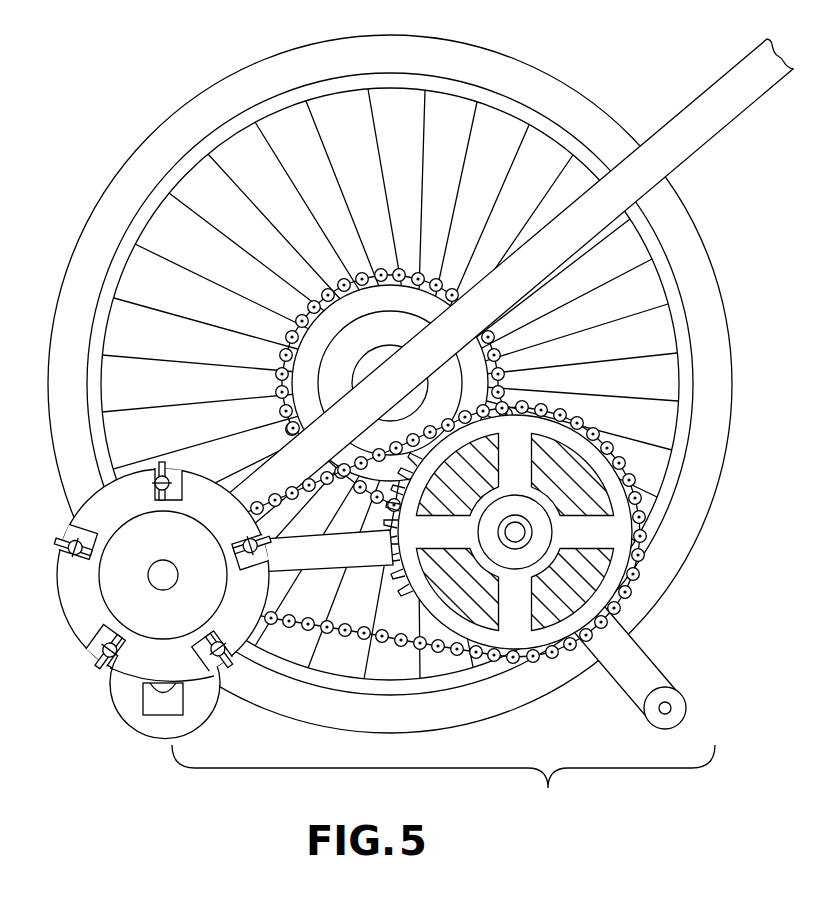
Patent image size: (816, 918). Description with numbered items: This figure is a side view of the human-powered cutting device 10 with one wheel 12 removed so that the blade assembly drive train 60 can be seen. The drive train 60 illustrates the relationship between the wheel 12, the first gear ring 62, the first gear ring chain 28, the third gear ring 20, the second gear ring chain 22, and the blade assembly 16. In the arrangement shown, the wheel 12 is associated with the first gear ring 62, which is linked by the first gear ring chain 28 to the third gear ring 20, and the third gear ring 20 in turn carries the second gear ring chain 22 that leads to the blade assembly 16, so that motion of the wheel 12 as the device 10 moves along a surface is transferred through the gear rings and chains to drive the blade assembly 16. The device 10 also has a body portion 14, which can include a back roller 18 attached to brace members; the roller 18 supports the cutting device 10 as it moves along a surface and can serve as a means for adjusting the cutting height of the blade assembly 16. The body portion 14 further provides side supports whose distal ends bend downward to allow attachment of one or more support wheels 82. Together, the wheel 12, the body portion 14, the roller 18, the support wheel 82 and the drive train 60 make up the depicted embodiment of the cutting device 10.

The cutting device 10 is at (122, 106).
The wheel 12 is at (688, 240).
The body portion 14 is at (715, 105).
The blade assembly 16 is at (146, 644).
The back roller 18 is at (683, 688).
The third gear ring 20 is at (648, 578).
The second gear ring chain 22 is at (308, 638).
The first gear ring chain 28 is at (333, 272).
The blade assembly drive train 60 is at (443, 782).
The first gear ring 62 is at (288, 350).
The support wheel 82 is at (155, 725).